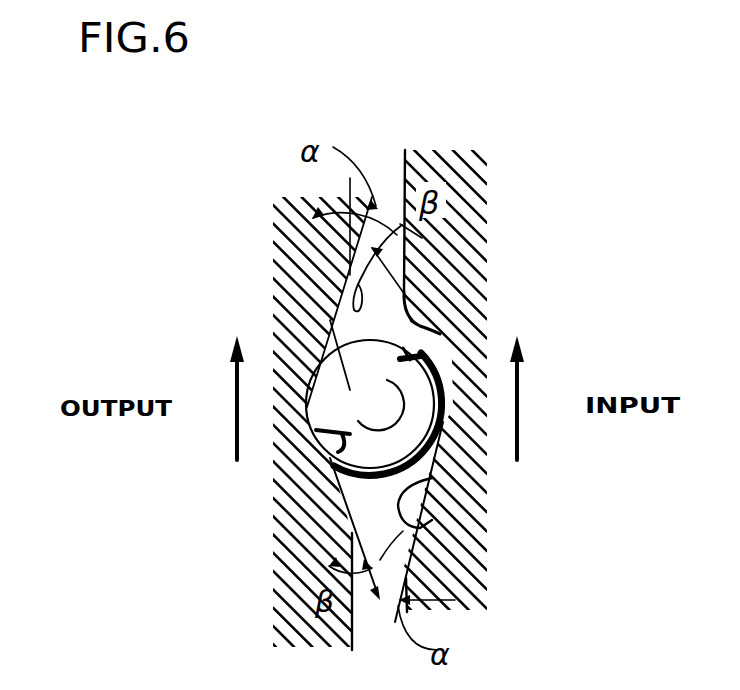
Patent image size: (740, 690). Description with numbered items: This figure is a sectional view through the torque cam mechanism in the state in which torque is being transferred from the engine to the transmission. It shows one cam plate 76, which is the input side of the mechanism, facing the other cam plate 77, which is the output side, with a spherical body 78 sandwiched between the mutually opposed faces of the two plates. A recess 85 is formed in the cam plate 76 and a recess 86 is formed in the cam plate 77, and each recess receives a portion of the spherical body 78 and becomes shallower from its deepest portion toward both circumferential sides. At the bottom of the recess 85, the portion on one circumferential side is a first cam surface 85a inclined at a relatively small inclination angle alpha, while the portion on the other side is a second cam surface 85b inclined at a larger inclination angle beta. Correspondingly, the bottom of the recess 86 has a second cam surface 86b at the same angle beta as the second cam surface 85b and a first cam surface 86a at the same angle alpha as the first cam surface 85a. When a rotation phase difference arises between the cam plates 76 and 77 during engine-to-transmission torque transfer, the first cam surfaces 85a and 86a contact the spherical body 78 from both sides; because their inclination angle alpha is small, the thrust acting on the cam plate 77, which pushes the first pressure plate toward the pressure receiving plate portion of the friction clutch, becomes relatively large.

The cam plate 76 is at (416, 278).
The cam plate 77 is at (280, 256).
The spherical body 78 is at (290, 295).
The recess 85 is at (440, 336).
The first cam surface 85a is at (437, 533).
The second cam surface 85b is at (427, 293).
The recess 86 is at (345, 440).
The first cam surface 86a is at (350, 295).
The second cam surface 86b is at (345, 475).